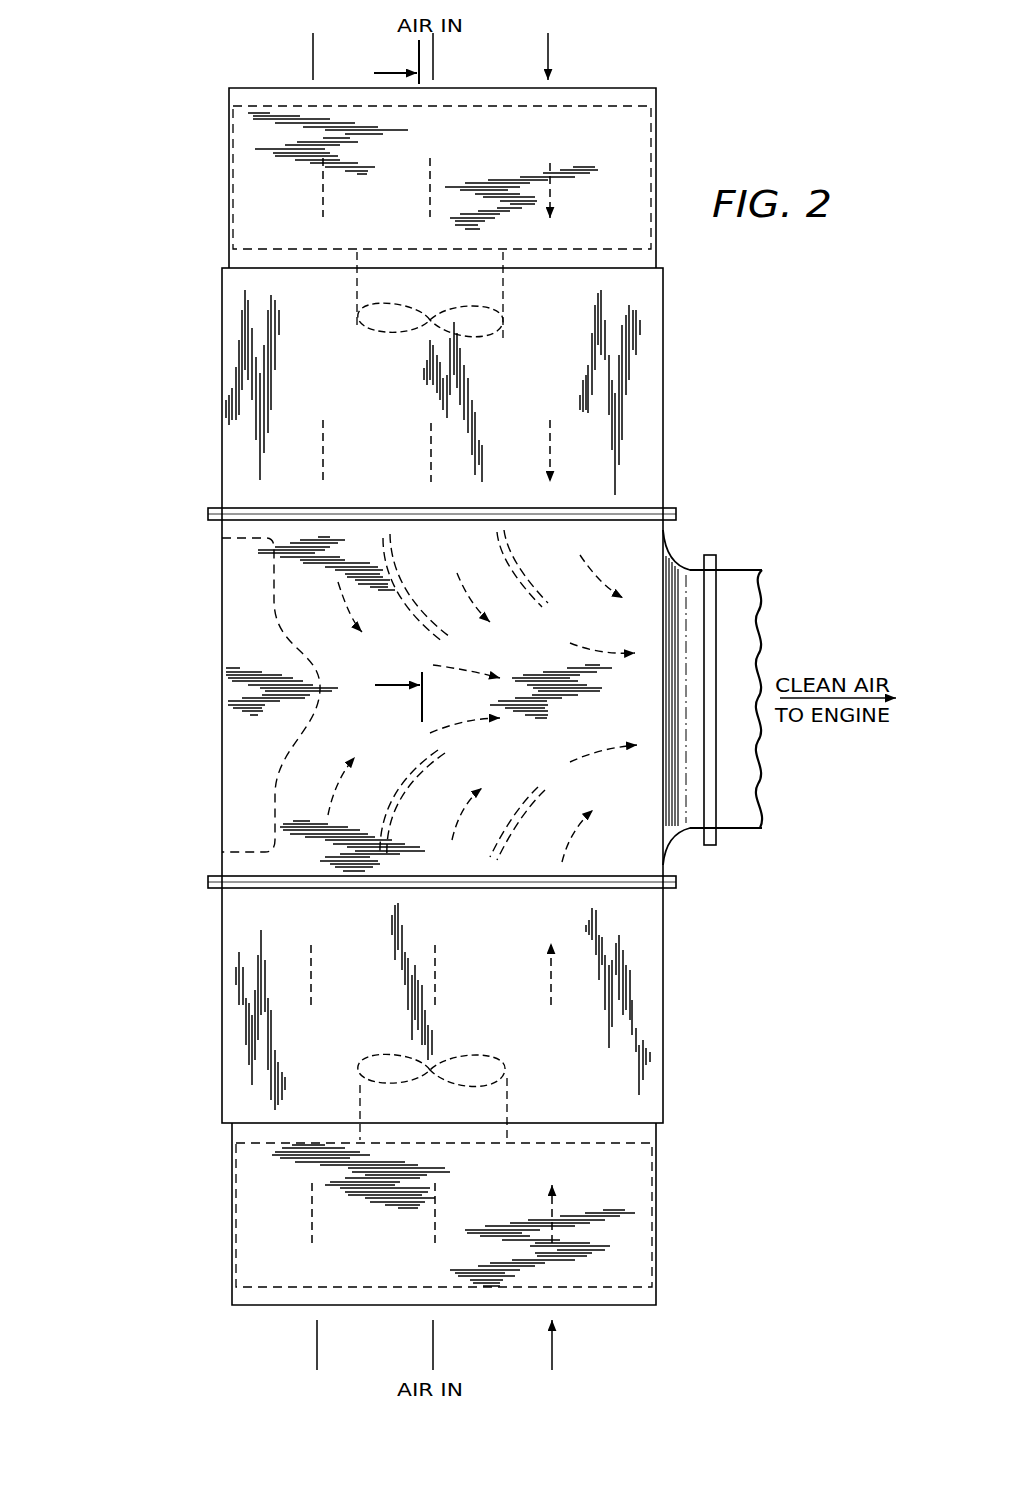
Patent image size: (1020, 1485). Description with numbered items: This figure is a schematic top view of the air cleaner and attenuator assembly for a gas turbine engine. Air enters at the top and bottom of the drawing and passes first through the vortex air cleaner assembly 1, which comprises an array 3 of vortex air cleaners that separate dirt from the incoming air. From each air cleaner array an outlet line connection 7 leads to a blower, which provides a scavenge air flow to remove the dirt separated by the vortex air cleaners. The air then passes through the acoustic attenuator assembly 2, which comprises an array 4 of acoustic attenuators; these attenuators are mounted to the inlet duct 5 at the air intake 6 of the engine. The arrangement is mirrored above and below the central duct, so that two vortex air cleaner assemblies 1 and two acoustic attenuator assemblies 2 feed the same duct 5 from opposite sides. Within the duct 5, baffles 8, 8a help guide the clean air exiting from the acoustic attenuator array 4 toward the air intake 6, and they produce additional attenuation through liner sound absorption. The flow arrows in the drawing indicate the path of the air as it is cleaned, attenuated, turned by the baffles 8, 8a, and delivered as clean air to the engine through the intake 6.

The vortex air cleaner assembly 1 is at (210, 169).
The acoustic attenuator assembly 2 is at (203, 384).
The array of vortex air cleaners 3 is at (405, 178).
The array of acoustic attenuators 4 is at (404, 413).
The inlet duct 5 is at (398, 380).
The air intake 6 is at (739, 582).
The outlet line connection 7 is at (477, 300).
The baffle 8 is at (497, 558).
The baffle 8a is at (268, 648).